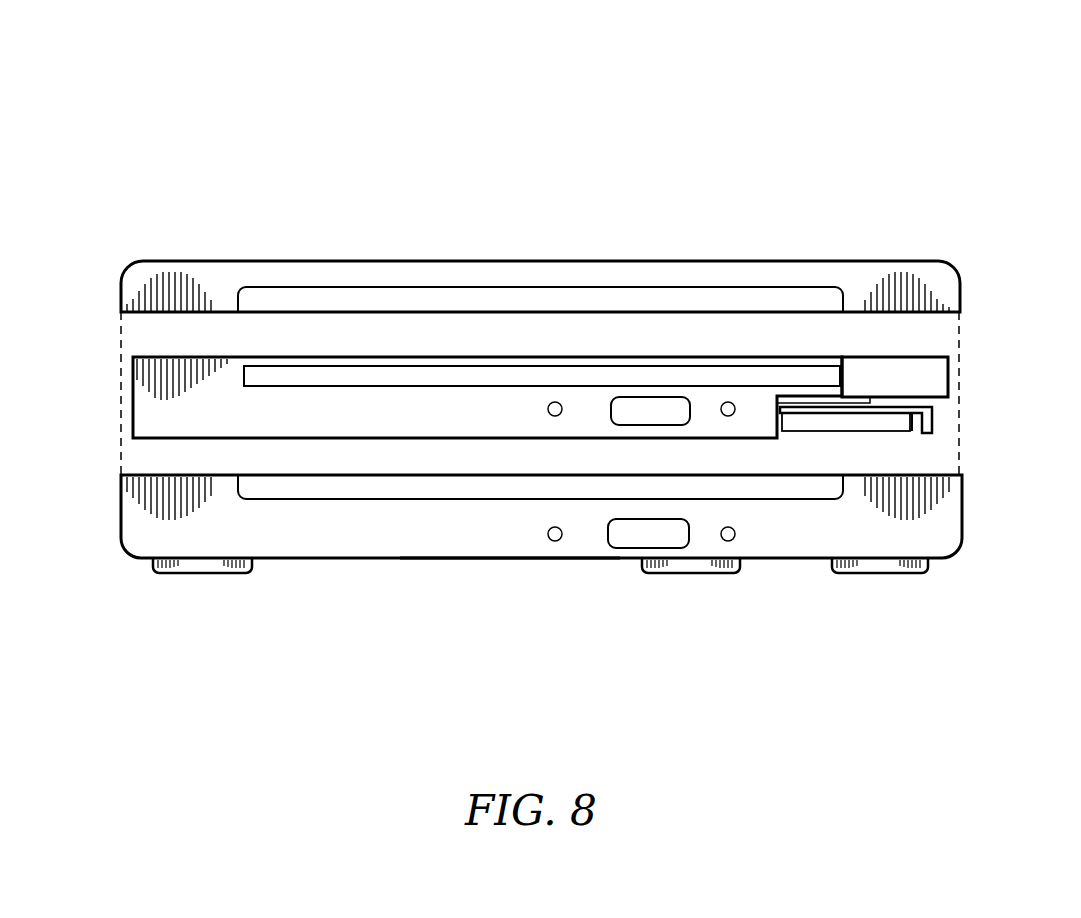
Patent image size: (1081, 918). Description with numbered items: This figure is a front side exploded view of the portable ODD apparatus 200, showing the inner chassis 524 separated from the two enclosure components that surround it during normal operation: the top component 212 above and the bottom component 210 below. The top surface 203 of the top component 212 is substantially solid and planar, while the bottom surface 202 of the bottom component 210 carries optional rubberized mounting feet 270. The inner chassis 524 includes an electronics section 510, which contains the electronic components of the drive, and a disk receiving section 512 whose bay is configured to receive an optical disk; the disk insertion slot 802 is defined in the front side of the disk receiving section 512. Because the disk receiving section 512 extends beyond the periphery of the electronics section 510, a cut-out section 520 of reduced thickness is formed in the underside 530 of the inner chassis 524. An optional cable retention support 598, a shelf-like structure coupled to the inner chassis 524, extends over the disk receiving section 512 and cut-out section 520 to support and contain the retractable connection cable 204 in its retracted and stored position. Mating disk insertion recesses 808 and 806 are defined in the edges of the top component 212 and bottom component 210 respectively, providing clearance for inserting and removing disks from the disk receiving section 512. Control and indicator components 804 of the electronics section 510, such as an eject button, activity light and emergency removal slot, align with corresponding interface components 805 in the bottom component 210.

The portable ODD apparatus 200 is at (205, 80).
The bottom surface 202 is at (385, 562).
The top surface 203 is at (530, 262).
The retractable connection cable 204 is at (808, 428).
The bottom component 210 is at (510, 548).
The top component 212 is at (876, 272).
The mounting feet 270 is at (175, 575).
The electronics section 510 is at (235, 410).
The disk receiving section 512 is at (905, 367).
The cut-out section 520 is at (838, 400).
The inner chassis 524 is at (133, 388).
The underside 530 is at (940, 400).
The cable retention support 598 is at (936, 418).
The disk insertion slot 802 is at (444, 372).
The control and indicator components 804 is at (728, 402).
The interface components 805 is at (650, 540).
The disk insertion recess 806 is at (315, 500).
The disk insertion recess 808 is at (292, 308).